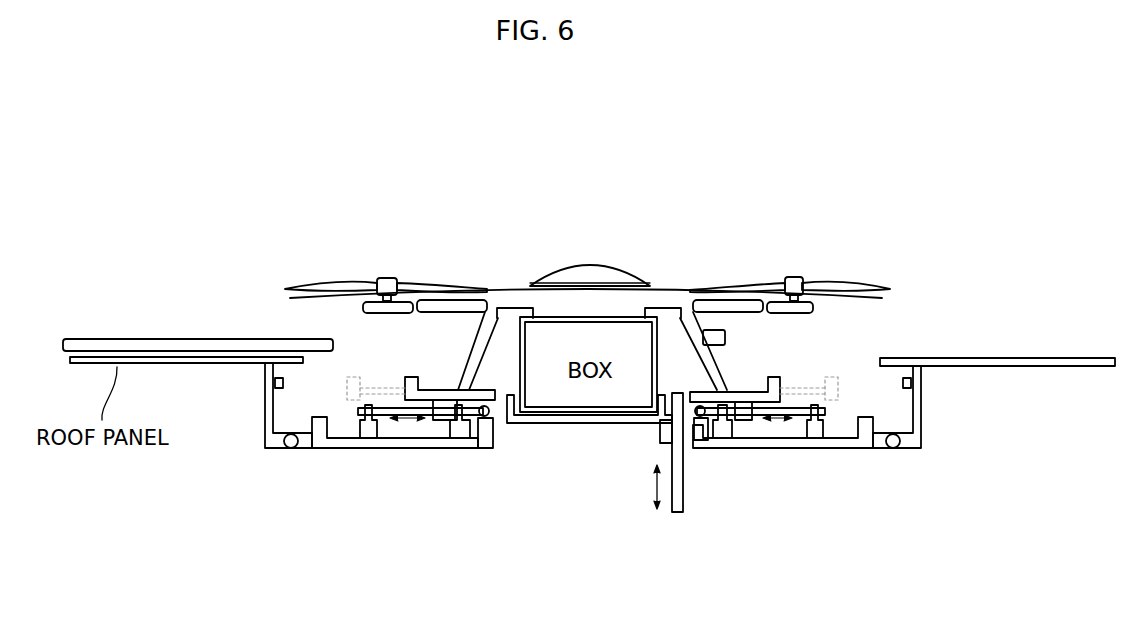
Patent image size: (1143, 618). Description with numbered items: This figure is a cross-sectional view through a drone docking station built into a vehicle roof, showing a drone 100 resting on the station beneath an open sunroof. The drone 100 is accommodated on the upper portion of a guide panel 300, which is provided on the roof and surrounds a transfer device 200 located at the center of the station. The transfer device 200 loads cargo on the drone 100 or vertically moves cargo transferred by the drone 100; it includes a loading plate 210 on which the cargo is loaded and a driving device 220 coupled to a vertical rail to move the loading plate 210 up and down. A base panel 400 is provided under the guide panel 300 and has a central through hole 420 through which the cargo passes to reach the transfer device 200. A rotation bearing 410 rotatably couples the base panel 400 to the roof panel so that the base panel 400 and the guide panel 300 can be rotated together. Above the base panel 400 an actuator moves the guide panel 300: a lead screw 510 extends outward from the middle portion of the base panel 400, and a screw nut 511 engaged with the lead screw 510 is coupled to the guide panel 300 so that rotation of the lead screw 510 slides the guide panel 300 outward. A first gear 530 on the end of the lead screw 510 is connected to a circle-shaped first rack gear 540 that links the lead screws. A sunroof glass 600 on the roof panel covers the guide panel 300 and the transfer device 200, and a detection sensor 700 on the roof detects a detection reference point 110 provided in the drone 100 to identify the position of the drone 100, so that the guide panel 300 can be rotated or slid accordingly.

The drone 100 is at (588, 280).
The detection reference point 110 is at (713, 330).
The transfer device 200 is at (645, 446).
The loading plate 210 is at (520, 423).
The driving device 220 is at (683, 497).
The guide panel 300 is at (412, 377).
The base panel 400 is at (380, 450).
The rotation bearing 410 is at (291, 448).
The through hole 420 is at (492, 430).
The lead screw 510 is at (428, 420).
The screw nut 511 is at (443, 420).
The first gear 530 is at (502, 312).
The first rack gear 540 is at (487, 427).
The sunroof glass 600 is at (162, 338).
The detection sensor 700 is at (265, 382).